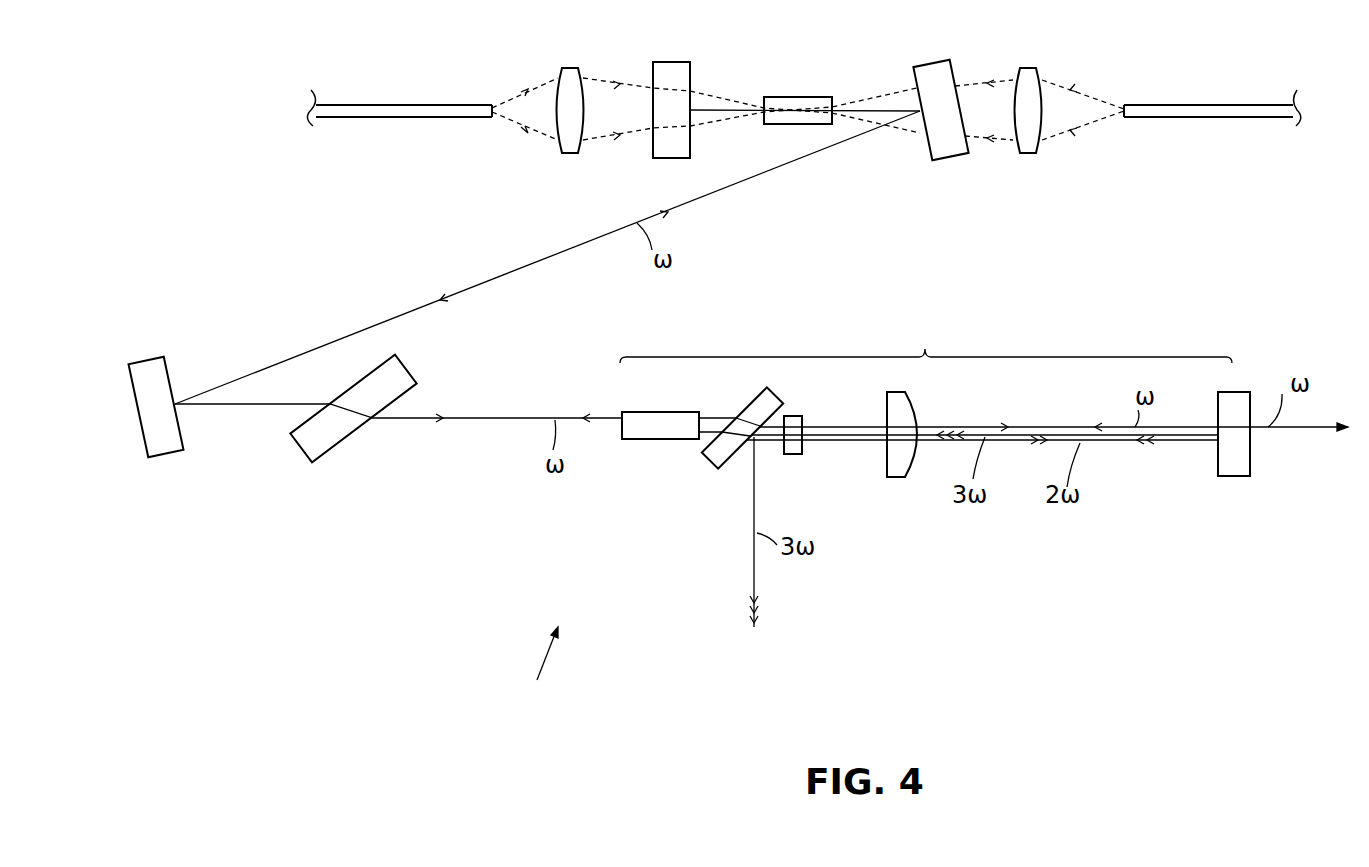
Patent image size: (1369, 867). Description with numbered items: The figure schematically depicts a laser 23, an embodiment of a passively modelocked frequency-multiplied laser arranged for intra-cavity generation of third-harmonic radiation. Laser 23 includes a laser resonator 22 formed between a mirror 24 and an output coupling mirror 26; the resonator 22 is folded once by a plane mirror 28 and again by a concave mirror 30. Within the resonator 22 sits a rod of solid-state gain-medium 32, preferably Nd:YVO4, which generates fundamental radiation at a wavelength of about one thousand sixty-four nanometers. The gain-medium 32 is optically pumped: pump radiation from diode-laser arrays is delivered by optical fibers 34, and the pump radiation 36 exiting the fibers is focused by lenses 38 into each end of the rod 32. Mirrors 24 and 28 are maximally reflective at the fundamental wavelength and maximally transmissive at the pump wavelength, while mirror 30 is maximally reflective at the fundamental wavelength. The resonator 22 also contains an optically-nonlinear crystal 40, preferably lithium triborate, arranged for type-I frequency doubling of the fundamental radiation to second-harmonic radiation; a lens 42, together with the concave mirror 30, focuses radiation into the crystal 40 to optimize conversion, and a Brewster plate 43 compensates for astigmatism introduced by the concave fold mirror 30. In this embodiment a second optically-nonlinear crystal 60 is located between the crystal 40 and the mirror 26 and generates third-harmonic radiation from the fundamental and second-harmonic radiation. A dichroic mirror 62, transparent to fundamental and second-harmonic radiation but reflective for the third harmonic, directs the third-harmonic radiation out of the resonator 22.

The laser resonator 22 is at (797, 87).
The laser 23 is at (540, 670).
The mirror 24 is at (678, 62).
The mirror 26 is at (1242, 477).
The plane mirror 28 is at (930, 66).
The concave mirror 30 is at (165, 448).
The solid-state gain-medium 32 is at (822, 97).
The optical fibers 34 is at (412, 104).
The pump radiation 36 is at (513, 125).
The lenses 38 is at (566, 68).
The optically-nonlinear crystal 40 is at (642, 440).
The lens 42 is at (890, 478).
The Brewster plate 43 is at (345, 440).
The optically-nonlinear crystal 60 is at (803, 452).
The dichroic mirror 62 is at (745, 405).